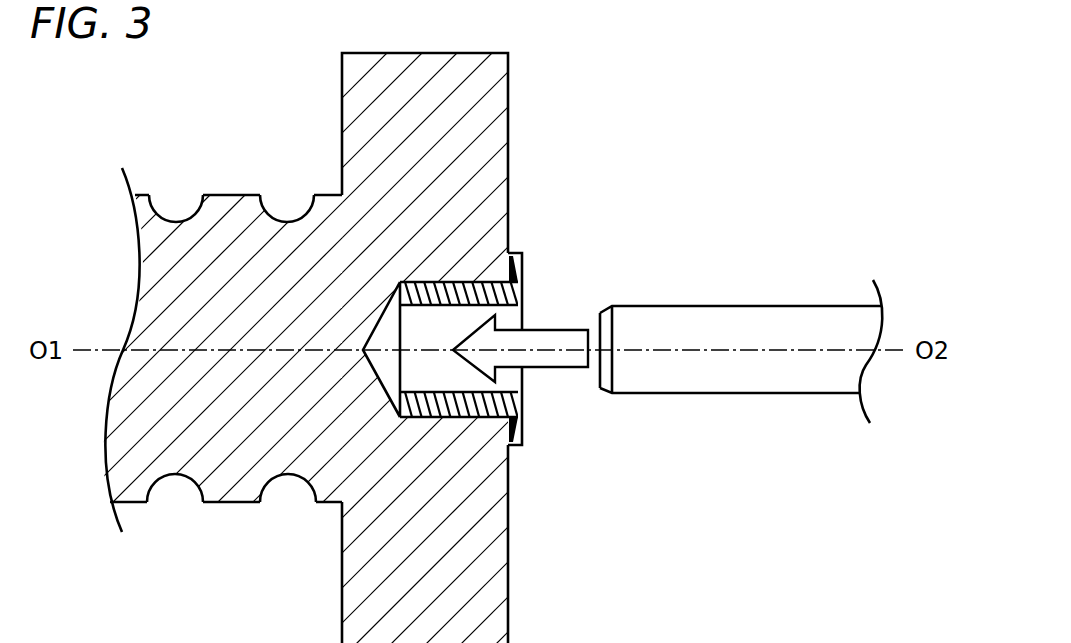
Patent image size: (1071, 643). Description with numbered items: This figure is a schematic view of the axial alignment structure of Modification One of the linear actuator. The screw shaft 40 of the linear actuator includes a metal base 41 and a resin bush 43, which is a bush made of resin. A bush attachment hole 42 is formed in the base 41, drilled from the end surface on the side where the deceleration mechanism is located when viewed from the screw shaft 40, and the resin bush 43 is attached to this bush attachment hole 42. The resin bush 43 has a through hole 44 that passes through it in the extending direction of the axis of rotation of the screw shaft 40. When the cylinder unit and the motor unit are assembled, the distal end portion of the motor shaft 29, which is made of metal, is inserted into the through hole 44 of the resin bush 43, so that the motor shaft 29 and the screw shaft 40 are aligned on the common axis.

The motor shaft 29 is at (745, 372).
The screw shaft 40 is at (526, 195).
The base 41 is at (235, 483).
The bush attachment hole 42 is at (405, 282).
The resin bush 43 is at (440, 420).
The through hole 44 is at (506, 300).